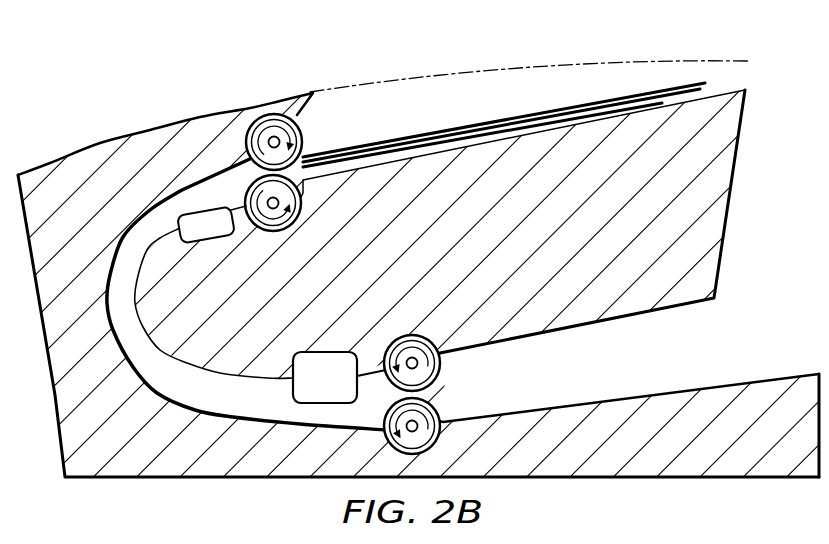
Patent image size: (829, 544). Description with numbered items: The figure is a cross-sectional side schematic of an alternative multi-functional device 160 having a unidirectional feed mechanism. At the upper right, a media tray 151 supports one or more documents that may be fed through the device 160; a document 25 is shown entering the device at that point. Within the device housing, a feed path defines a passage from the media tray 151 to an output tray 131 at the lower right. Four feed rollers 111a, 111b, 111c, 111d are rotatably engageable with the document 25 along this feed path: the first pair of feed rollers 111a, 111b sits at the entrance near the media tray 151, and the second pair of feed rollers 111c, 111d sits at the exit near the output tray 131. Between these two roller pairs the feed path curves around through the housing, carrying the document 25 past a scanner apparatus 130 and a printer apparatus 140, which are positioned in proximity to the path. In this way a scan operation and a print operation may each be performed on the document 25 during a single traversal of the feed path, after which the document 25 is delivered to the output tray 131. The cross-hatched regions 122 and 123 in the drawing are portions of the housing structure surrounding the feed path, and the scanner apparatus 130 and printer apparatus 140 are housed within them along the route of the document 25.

The multi-functional device 160 is at (156, 83).
The media tray 151 is at (507, 87).
The document 25 is at (423, 136).
The feed roller 111a is at (301, 143).
The feed roller 111b is at (296, 194).
The feed roller 111c is at (431, 408).
The feed roller 111d is at (440, 360).
The upper guide block 122 is at (723, 210).
The housing body 123 is at (62, 395).
The output tray 131 is at (717, 393).
The scanner apparatus 130 is at (205, 241).
The printer apparatus 140 is at (342, 390).